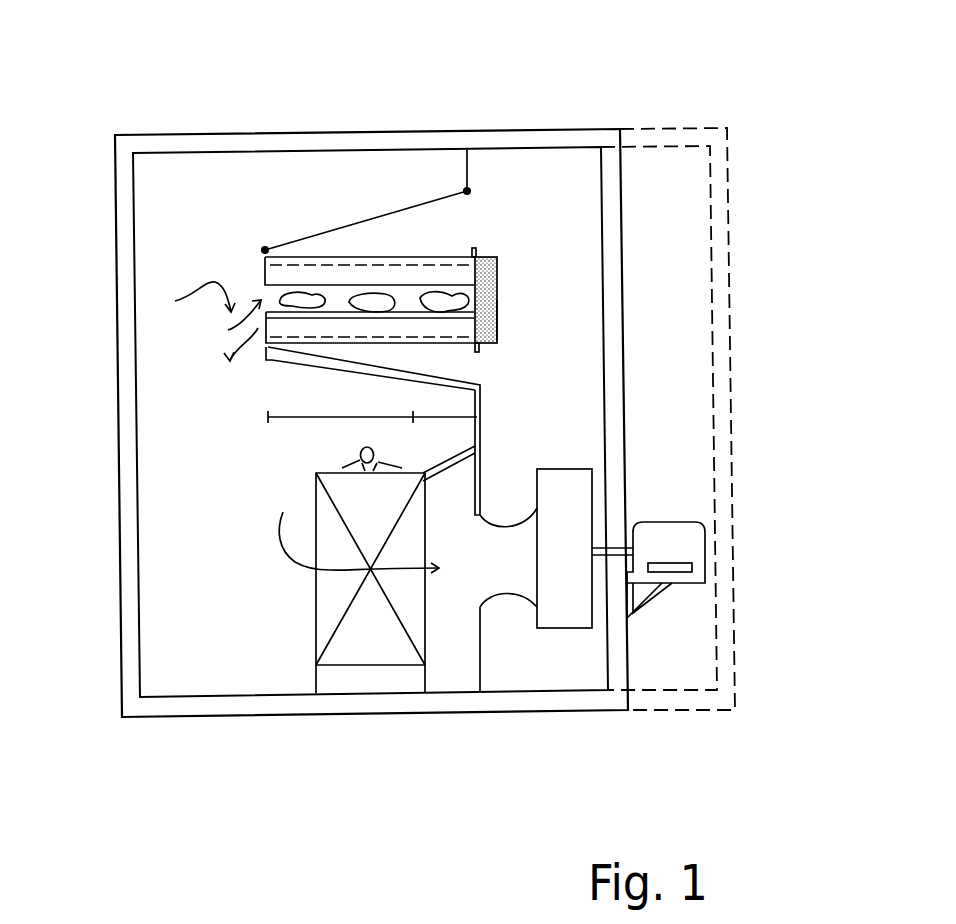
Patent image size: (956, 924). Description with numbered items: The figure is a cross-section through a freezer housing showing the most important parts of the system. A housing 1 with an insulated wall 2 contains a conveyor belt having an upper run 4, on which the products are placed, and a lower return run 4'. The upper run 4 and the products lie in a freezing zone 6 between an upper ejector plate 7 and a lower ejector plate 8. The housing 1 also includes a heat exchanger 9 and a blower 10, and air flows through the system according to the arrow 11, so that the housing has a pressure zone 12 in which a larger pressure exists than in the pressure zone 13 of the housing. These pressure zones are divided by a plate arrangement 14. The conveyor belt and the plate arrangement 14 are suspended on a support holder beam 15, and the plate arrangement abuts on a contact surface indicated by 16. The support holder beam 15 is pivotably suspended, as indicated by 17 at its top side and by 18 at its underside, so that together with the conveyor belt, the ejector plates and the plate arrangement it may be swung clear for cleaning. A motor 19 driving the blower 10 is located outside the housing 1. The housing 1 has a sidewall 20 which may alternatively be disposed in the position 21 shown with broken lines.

The housing 1 is at (580, 126).
The insulated wall 2 is at (522, 131).
The upper run 4 is at (401, 352).
The lower return run 4' is at (533, 453).
The freezing zone 6 is at (228, 330).
The upper ejector plate 7 is at (263, 270).
The lower ejector plate 8 is at (266, 352).
The heat exchanger 9 is at (325, 610).
The blower 10 is at (563, 618).
The arrow 11 is at (175, 301).
The pressure zone 12 is at (594, 356).
The pressure zone 13 is at (470, 558).
The plate arrangement 14 is at (375, 217).
The support holder beam 15 is at (498, 322).
The contact surface 16 is at (463, 156).
The pivotable suspension 17 is at (474, 250).
The pivotable suspension 18 is at (485, 350).
The motor 19 is at (687, 563).
The sidewall 20 is at (612, 222).
The position 21 is at (722, 272).